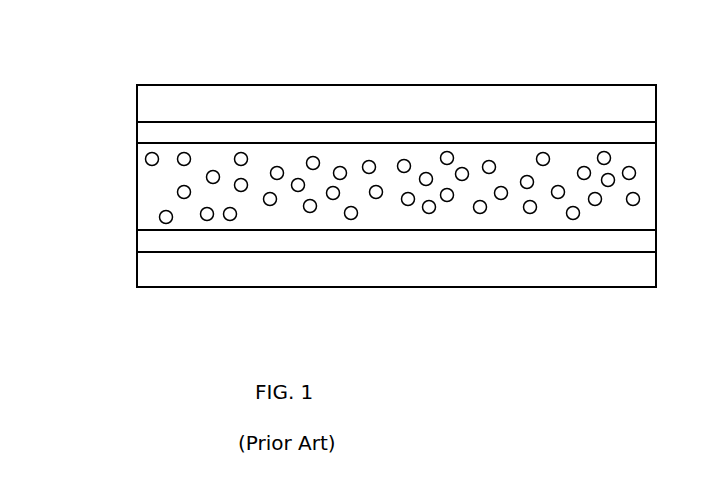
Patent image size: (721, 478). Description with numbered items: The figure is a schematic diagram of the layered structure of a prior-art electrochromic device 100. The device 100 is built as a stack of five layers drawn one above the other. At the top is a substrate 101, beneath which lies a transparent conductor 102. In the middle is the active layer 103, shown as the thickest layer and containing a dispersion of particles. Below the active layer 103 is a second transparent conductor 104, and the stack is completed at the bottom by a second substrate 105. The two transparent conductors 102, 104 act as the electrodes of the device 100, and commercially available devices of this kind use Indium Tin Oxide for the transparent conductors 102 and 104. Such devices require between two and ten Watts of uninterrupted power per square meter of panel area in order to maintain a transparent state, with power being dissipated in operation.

The electrochromic device 100 is at (453, 55).
The substrate 101 is at (135, 92).
The transparent conductor 102 is at (135, 129).
The active layer 103 is at (135, 187).
The second transparent conductor 104 is at (135, 246).
The second substrate 105 is at (135, 278).